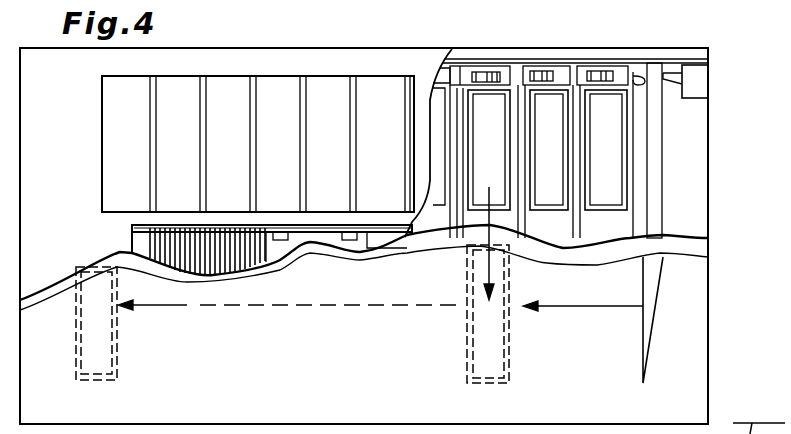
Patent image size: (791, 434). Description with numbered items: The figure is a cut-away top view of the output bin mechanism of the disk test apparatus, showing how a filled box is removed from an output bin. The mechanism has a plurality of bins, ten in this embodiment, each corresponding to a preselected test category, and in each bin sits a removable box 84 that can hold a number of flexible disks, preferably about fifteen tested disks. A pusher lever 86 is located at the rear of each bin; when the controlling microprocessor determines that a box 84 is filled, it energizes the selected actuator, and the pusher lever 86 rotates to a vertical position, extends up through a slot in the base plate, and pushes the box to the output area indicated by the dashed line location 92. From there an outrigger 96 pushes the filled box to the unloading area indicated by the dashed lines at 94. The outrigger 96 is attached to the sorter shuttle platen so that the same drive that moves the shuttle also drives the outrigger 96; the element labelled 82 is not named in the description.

The panel module 82 is at (181, 95).
The removable box 84 is at (610, 192).
The pusher lever 86 is at (601, 72).
The dashed line location 92 is at (510, 335).
The unloading area 94 is at (126, 323).
The outrigger 96 is at (650, 327).